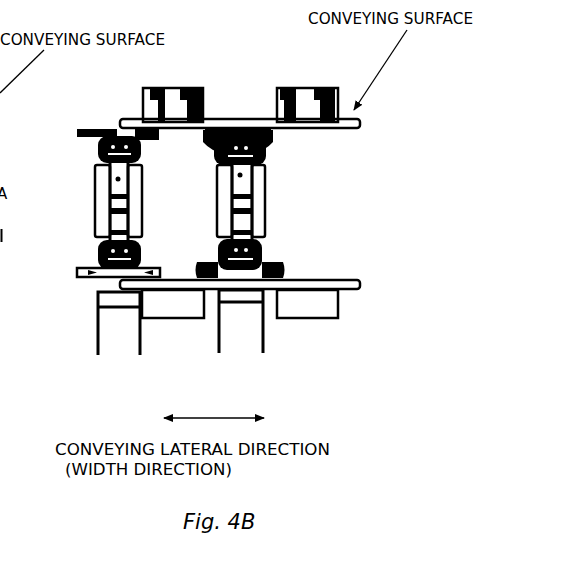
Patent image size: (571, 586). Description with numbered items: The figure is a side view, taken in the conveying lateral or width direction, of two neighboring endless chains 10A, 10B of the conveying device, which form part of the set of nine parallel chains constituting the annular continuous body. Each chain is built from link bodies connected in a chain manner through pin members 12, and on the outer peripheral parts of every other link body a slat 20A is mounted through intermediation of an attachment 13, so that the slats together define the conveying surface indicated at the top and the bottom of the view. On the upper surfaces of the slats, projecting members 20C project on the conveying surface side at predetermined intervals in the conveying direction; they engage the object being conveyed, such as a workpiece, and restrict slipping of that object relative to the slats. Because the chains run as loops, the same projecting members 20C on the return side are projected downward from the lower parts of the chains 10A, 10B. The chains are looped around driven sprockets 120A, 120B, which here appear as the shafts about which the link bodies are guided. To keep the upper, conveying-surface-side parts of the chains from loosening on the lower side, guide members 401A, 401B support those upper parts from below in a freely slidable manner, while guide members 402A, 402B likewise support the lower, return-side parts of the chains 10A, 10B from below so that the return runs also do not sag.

The endless chain 10A is at (86, 216).
The endless chain 10B is at (267, 202).
The pin member 12 is at (96, 152).
The attachment 13 is at (80, 126).
The slat 20A is at (358, 131).
The projecting member 20C is at (202, 89).
The driven sprocket 120A is at (116, 179).
The driven sprocket 120B is at (242, 175).
The guide member 401A is at (122, 210).
The guide member 401B is at (247, 226).
The guide member 402A is at (117, 336).
The guide member 402B is at (250, 331).